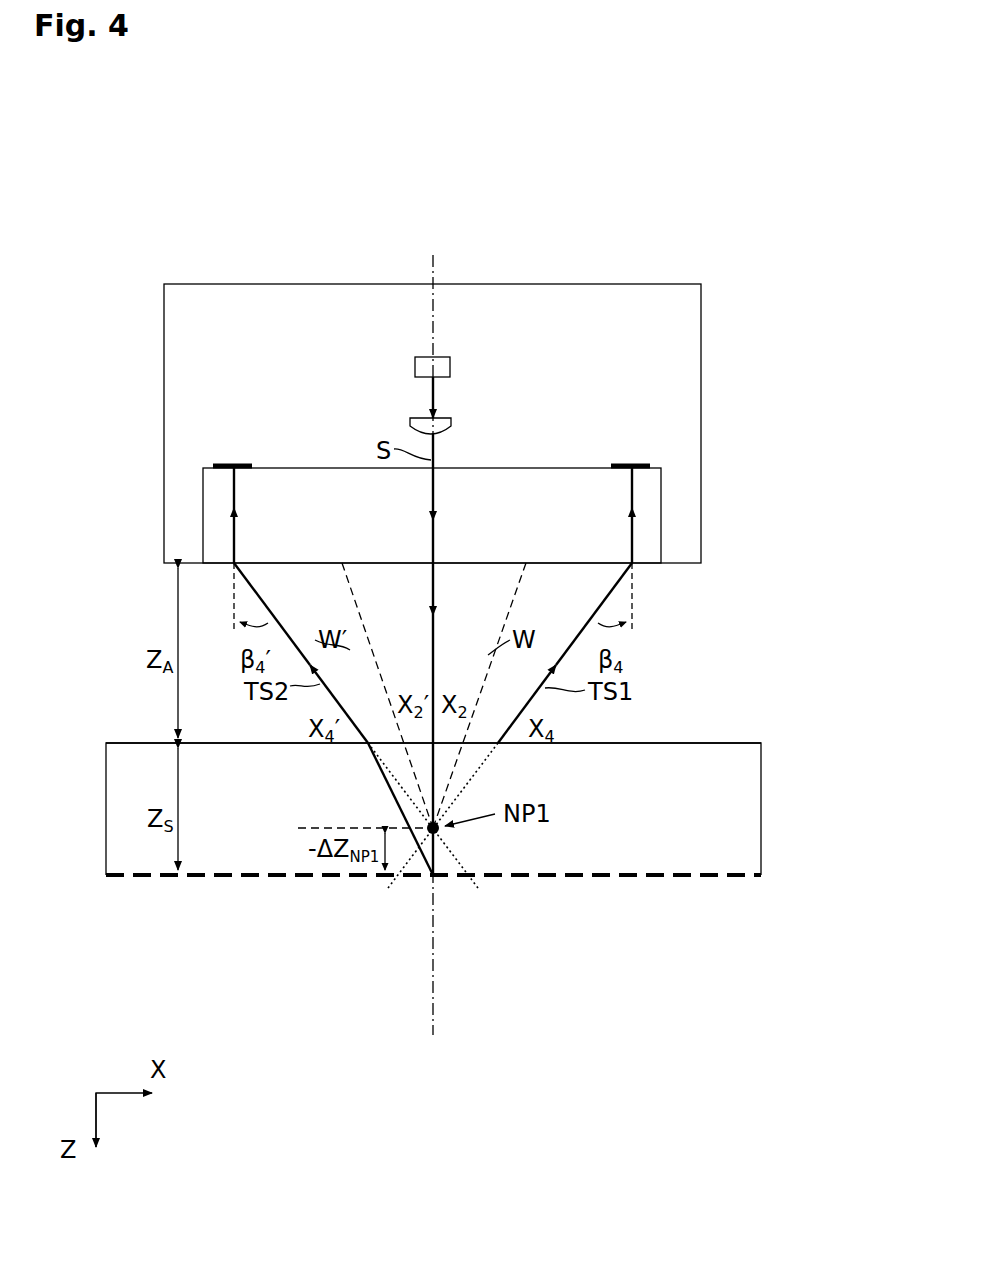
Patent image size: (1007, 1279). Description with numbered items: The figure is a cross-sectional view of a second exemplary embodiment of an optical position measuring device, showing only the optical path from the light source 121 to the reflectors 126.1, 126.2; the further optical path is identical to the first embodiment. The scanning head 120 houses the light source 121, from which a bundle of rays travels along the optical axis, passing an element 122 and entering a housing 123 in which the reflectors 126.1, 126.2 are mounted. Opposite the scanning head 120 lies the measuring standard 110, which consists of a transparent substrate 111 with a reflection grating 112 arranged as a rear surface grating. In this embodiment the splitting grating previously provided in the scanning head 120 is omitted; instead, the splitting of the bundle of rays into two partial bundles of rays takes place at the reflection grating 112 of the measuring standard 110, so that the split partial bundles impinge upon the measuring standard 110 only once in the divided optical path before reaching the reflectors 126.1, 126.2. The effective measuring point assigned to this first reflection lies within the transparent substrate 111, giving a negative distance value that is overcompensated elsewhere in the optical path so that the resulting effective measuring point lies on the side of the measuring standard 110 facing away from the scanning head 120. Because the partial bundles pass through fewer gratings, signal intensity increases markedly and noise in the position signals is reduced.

The measuring standard 110 is at (100, 832).
The transparent substrate 111 is at (752, 840).
The reflection grating 112 is at (722, 878).
The scanning head 120 is at (160, 385).
The light source 121 is at (442, 366).
The lens 122 is at (443, 427).
The detector housing 123 is at (643, 511).
The reflector 126.1 is at (633, 463).
The reflector 126.2 is at (235, 463).